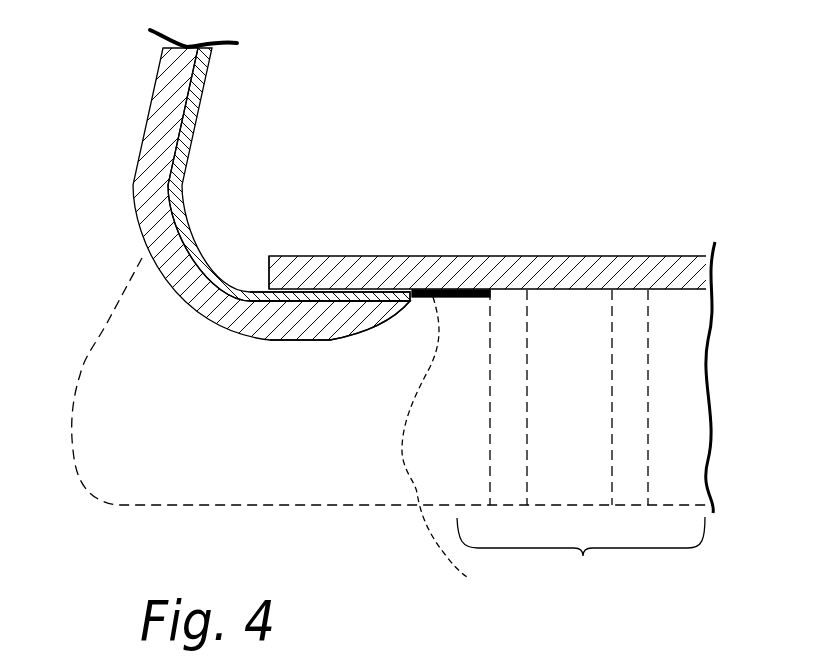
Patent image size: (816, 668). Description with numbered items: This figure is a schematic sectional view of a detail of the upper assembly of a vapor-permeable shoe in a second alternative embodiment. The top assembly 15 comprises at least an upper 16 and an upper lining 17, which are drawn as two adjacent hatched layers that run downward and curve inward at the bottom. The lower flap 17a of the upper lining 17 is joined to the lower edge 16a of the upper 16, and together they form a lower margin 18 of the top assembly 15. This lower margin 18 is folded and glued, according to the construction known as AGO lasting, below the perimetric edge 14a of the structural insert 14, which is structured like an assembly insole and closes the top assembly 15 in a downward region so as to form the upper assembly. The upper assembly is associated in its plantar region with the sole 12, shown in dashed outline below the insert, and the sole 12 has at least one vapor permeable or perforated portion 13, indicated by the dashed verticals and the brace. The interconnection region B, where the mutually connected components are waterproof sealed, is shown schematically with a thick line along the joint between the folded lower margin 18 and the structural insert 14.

The sole 12 is at (58, 442).
The vapor permeable or perforated portion 13 is at (581, 441).
The structural insert 14 is at (489, 293).
The perimetric edge 14a is at (290, 263).
The top assembly 15 is at (352, 288).
The upper 16 is at (352, 295).
The lower edge 16a is at (280, 327).
The upper lining 17 is at (337, 155).
The lower flap 17a is at (333, 298).
The lower margin 18 is at (366, 342).
The interconnection regions B is at (447, 451).